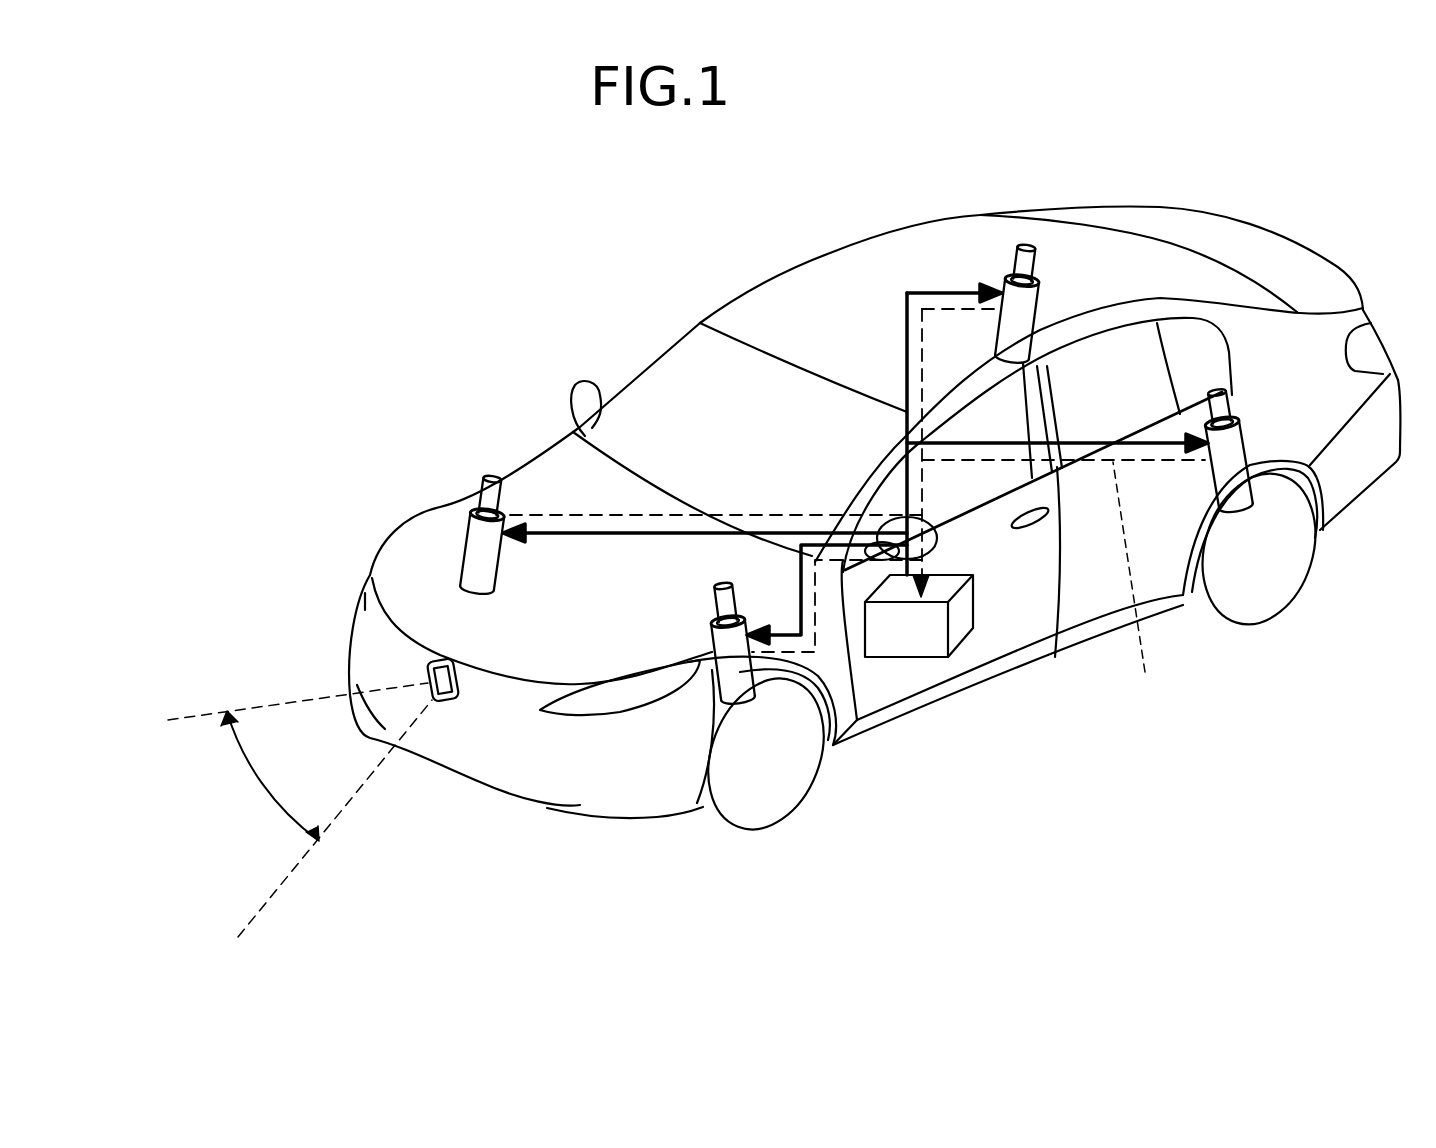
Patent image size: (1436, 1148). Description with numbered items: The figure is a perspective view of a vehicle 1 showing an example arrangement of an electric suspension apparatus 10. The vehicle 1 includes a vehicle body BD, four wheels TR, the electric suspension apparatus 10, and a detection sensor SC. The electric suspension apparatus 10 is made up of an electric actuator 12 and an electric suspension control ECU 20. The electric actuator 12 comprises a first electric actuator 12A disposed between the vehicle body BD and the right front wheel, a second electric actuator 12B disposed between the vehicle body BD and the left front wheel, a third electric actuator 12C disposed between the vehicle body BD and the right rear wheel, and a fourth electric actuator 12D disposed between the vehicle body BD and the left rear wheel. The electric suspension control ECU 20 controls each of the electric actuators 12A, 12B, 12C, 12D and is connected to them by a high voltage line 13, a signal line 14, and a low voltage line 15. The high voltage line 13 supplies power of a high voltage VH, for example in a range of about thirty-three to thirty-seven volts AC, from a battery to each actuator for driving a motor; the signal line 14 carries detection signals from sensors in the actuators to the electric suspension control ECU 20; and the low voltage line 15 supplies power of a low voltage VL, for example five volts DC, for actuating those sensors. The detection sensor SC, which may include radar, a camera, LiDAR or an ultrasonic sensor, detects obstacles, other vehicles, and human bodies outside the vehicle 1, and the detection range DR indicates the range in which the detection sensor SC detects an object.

The vehicle 1 is at (972, 130).
The electric suspension apparatus 10 is at (825, 477).
The electric actuator 12 is at (853, 516).
The first electric actuator 12A is at (462, 553).
The second electric actuator 12B is at (713, 687).
The third electric actuator 12C is at (1052, 298).
The fourth electric actuator 12D is at (1252, 443).
The high voltage line 13 is at (1026, 588).
The high voltage VH is at (985, 447).
The signal line 14 is at (1146, 582).
The low voltage line 15 is at (1146, 582).
The low voltage VL is at (1146, 582).
The electric suspension control ECU 20 is at (908, 660).
The vehicle body BD is at (820, 256).
The detection sensor SC is at (457, 684).
The detection range DR is at (300, 810).
The wheel TR is at (757, 805).